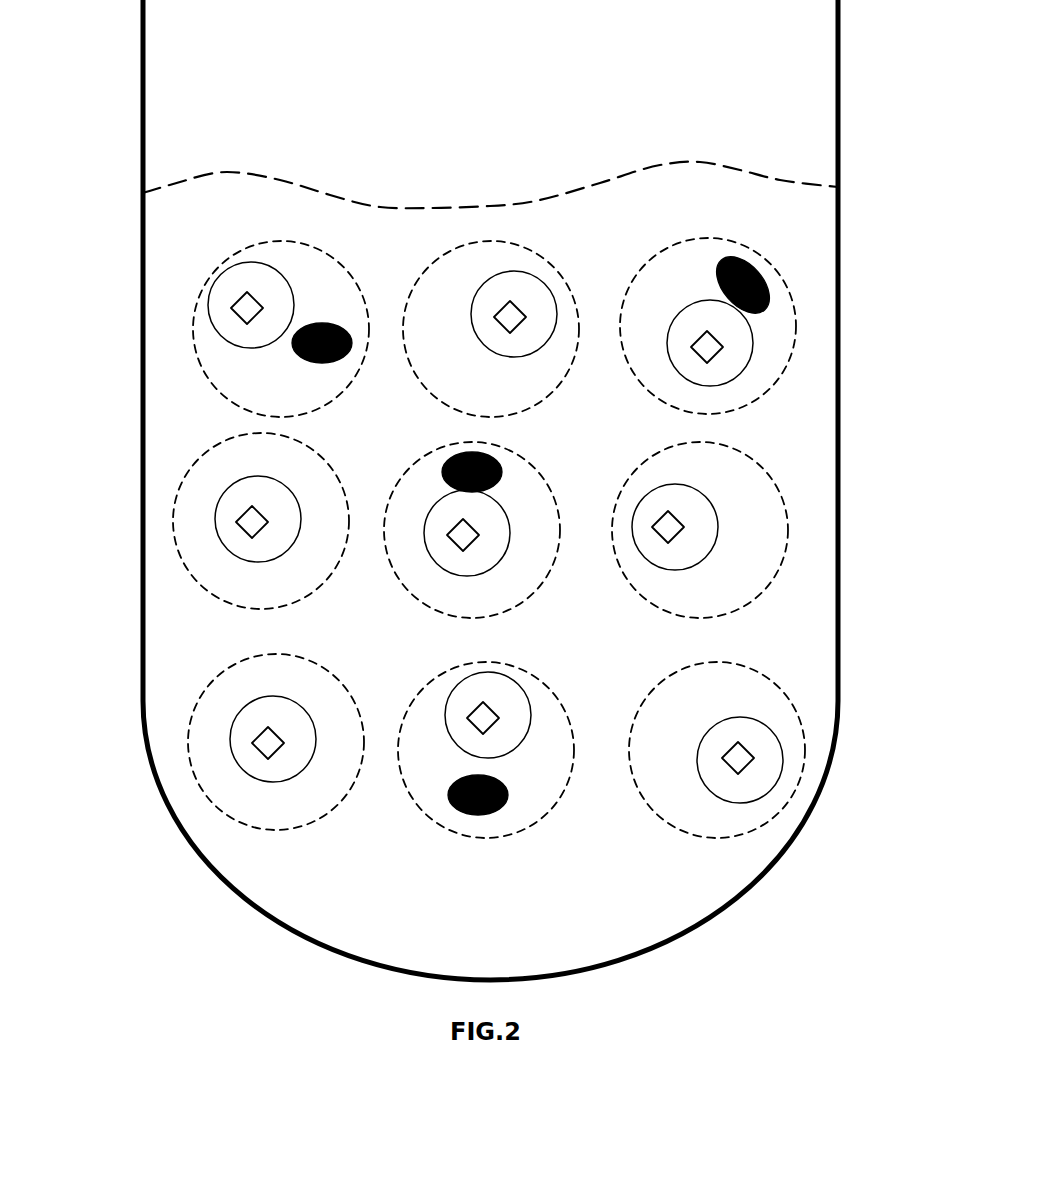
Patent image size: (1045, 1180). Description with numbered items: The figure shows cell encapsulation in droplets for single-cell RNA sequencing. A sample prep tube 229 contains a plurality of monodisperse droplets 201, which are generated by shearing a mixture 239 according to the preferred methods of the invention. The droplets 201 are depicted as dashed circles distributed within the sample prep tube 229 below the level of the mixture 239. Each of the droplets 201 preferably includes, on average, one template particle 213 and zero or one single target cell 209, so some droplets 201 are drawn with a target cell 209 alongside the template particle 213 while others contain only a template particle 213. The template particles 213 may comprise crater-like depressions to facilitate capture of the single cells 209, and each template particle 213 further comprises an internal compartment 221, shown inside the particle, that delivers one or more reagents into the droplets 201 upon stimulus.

The droplets 201 is at (488, 243).
The single target cell 209 is at (307, 363).
The template particle 213 is at (218, 500).
The internal compartment 221 is at (240, 300).
The sample prep tube 229 is at (143, 108).
The mixture 239 is at (798, 230).